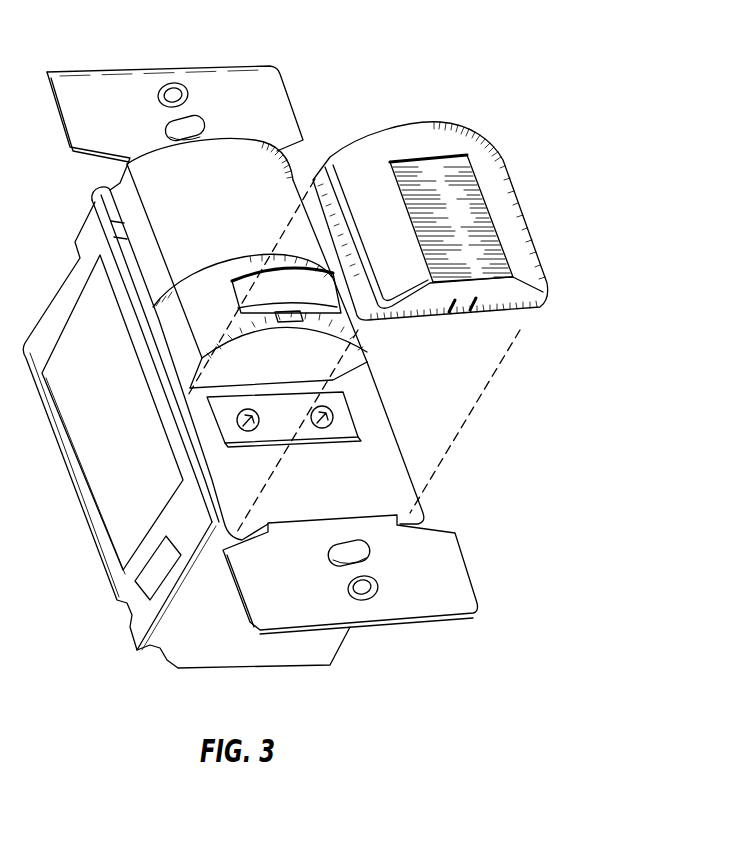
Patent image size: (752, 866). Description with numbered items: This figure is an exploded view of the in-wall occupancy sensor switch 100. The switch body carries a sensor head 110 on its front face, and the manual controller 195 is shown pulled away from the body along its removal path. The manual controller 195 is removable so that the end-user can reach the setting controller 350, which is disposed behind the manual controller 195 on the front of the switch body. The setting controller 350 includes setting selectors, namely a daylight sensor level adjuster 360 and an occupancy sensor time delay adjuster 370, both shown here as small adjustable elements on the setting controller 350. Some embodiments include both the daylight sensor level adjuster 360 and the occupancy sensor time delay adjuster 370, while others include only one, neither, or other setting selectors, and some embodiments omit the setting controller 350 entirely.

The in-wall occupancy sensor switch 100 is at (543, 56).
The sensor head 110 is at (261, 199).
The manual controller 195 is at (503, 184).
The setting controller 350 is at (353, 415).
The daylight sensor level adjuster 360 is at (236, 421).
The occupancy sensor time delay adjuster 370 is at (322, 428).